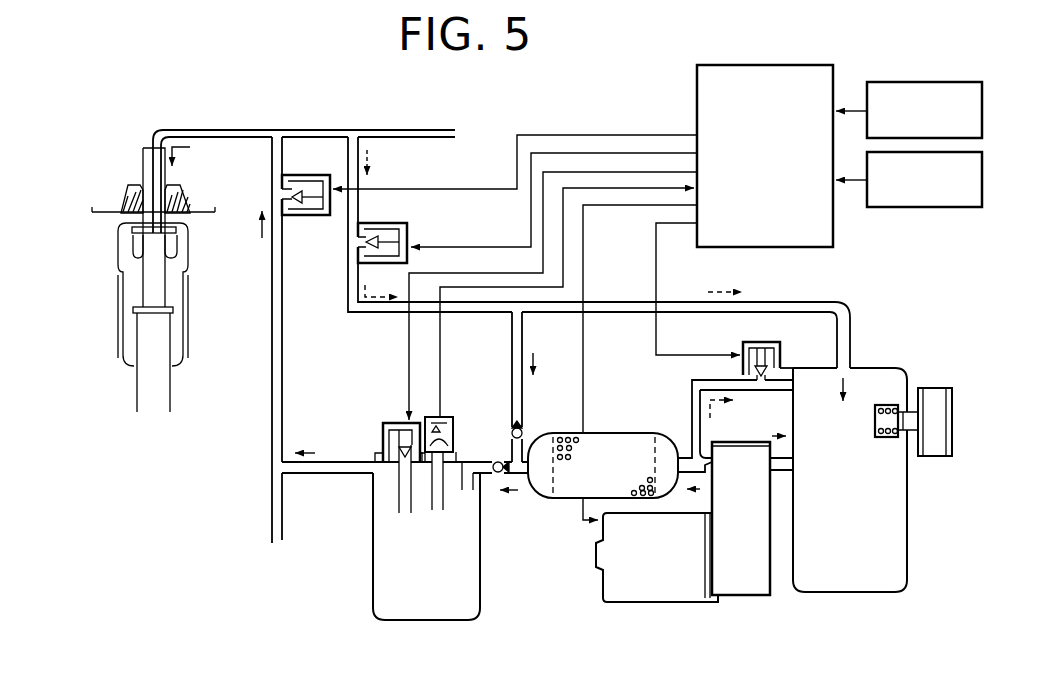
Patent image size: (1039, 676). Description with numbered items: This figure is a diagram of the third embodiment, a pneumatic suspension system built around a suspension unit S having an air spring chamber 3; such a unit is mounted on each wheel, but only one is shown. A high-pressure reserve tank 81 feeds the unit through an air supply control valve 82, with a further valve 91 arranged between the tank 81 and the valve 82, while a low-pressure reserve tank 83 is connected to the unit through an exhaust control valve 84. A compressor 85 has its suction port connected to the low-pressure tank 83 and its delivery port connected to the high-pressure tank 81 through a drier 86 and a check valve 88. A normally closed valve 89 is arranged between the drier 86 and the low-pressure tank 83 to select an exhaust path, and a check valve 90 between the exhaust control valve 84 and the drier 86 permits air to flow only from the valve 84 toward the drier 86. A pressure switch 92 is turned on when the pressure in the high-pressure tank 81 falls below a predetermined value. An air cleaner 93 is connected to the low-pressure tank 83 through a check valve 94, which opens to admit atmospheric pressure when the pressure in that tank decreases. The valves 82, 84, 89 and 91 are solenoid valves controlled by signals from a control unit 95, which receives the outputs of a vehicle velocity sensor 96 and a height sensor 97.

The air spring chamber 3 is at (188, 300).
The suspension unit S is at (112, 300).
The high-pressure reserve tank 81 is at (373, 586).
The air supply control valve 82 is at (303, 215).
The low-pressure reserve tank 83 is at (907, 544).
The exhaust control valve 84 is at (409, 232).
The compressor 85 is at (657, 600).
The drier 86 is at (624, 442).
The check valve 88 is at (493, 481).
The normally closed valve 89 is at (781, 351).
The check valve 90 is at (525, 428).
The valve 91 is at (382, 425).
The pressure switch 92 is at (455, 424).
The air cleaner 93 is at (951, 388).
The check valve 94 is at (885, 438).
The control unit 95 is at (763, 65).
The vehicle velocity sensor 96 is at (985, 112).
The height sensor 97 is at (985, 180).